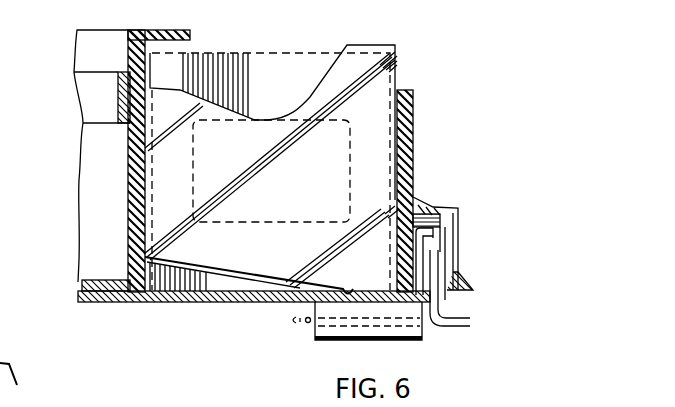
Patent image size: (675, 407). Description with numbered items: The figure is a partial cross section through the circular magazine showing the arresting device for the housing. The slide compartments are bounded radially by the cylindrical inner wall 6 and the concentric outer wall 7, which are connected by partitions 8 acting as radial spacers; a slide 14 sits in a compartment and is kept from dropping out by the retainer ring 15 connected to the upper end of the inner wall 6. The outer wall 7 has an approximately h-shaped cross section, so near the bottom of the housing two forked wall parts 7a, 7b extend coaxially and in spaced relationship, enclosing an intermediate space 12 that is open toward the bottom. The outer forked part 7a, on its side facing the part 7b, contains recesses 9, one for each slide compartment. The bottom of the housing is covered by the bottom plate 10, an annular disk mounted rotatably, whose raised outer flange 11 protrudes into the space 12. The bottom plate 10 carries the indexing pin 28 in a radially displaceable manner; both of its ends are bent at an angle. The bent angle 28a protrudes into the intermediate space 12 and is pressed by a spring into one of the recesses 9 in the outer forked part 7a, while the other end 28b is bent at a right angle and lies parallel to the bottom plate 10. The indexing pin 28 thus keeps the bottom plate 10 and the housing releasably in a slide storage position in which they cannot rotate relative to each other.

The inner wall 6 is at (130, 200).
The outer wall 7 is at (414, 123).
The outer forked wall part 7a is at (460, 228).
The inner forked wall part 7b is at (400, 240).
The partition 8 is at (394, 60).
The recess 9 is at (462, 250).
The bottom plate 10 is at (233, 303).
The raised outer flange 11 is at (400, 255).
The intermediate space 12 is at (443, 212).
The slide 14 is at (276, 62).
The retainer ring 15 is at (95, 45).
The indexing pin 28 is at (462, 321).
The bent angle 28a is at (468, 283).
The other end 28b is at (310, 323).